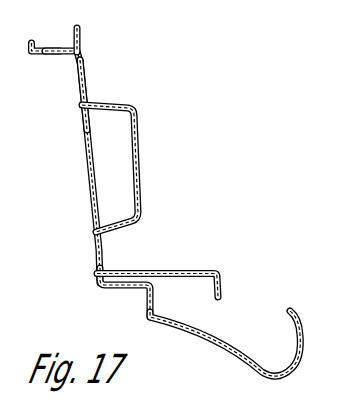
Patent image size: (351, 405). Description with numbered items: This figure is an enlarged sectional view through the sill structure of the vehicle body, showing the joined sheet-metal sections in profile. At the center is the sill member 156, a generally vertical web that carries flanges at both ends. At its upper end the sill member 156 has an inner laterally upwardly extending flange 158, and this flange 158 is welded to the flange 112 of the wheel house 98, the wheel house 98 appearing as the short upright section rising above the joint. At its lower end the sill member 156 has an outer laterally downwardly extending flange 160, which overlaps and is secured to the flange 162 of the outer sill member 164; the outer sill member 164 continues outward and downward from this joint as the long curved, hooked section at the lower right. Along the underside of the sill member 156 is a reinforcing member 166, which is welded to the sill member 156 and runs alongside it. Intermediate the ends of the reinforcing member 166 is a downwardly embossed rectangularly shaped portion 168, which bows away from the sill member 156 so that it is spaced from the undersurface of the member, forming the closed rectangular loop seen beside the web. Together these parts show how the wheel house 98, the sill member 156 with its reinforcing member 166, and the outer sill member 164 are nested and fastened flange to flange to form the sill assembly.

The wheel house 98 is at (81, 30).
The flange 112 is at (53, 47).
The inner laterally upwardly extending flange 158 is at (61, 56).
The reinforcing member 166 is at (87, 82).
The sill member 156 is at (89, 182).
The downwardly embossed rectangularly shaped portion 168 is at (139, 147).
The flange 162 is at (137, 282).
The outer laterally downwardly extending flange 160 is at (134, 290).
The outer sill member 164 is at (222, 349).